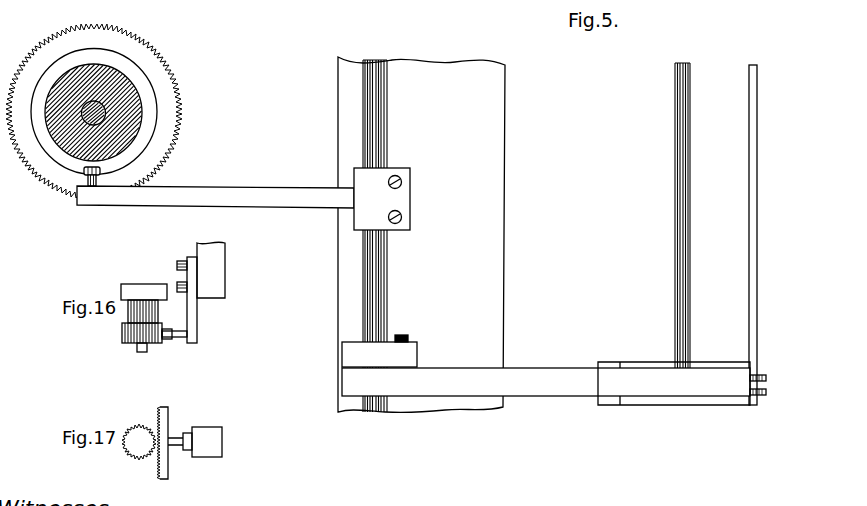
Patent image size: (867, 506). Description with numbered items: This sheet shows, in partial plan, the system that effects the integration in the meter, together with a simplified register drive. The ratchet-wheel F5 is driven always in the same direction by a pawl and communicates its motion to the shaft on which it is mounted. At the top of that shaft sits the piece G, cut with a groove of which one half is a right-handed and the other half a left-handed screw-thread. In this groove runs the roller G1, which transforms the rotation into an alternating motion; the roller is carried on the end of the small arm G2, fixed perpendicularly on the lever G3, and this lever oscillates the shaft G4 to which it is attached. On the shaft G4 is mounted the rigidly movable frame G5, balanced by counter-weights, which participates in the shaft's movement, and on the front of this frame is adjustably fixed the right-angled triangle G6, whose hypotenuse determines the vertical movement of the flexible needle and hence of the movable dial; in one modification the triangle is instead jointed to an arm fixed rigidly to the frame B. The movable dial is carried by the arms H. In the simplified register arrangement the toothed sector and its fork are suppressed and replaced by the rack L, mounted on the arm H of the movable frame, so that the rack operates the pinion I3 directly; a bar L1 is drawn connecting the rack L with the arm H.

In FIG. 5, the ratchet-wheel F5 is at (103, 111).
In FIG. 5, the grooved piece G is at (94, 112).
In FIG. 5, the roller G1 is at (83, 171).
In FIG. 5, the small arm G2 is at (97, 181).
In FIG. 5, the lever G3 is at (226, 189).
In FIG. 5, the shaft G4 is at (386, 123).
In FIG. 5, the frame G5 is at (546, 370).
In FIG. 5, the right-angled triangle G6 is at (751, 230).
In FIG. 5, the frame B is at (421, 234).
In FIG. 16, the arms H is at (225, 275).
In FIG. 17, the arms H is at (223, 444).
In FIG. 16, the rack L is at (168, 338).
In FIG. 17, the rack L is at (166, 428).
In FIG. 16, the rack bar L1 is at (198, 320).
In FIG. 17, the rack bar L1 is at (187, 452).
In FIG. 16, the pinion I3 is at (121, 339).
In FIG. 17, the pinion I3 is at (137, 455).